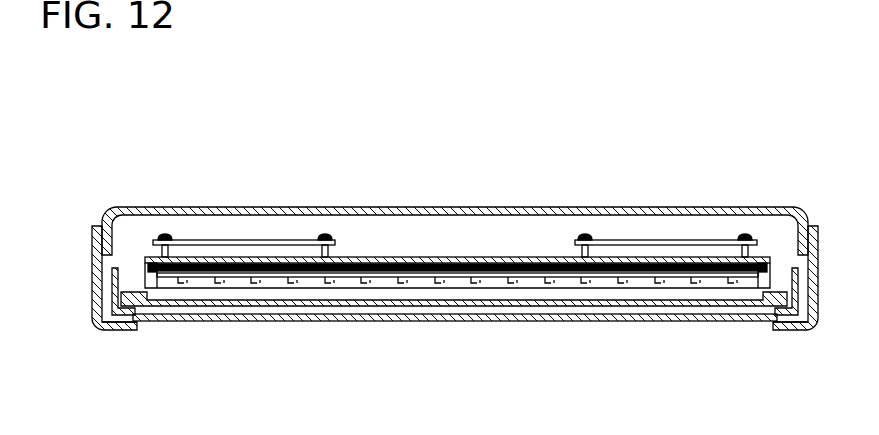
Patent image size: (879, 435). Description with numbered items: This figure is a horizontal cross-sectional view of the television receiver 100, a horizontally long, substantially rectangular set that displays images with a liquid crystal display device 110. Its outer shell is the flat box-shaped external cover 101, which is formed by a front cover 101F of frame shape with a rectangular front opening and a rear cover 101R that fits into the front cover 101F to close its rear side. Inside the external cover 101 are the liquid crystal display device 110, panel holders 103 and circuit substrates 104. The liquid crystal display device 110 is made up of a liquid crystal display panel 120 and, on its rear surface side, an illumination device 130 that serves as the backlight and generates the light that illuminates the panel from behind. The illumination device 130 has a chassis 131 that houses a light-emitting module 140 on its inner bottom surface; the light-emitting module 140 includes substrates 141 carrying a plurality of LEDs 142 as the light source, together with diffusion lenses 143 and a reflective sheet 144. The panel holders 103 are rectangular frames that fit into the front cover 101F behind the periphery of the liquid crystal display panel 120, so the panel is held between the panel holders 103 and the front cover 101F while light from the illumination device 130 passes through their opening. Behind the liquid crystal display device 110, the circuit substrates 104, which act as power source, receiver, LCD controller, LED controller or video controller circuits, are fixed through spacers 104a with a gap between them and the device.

The television receiver 100 is at (739, 149).
The external cover 101 is at (225, 136).
The front cover 101F is at (96, 226).
The rear cover 101R is at (190, 207).
The panel holders 103 is at (117, 323).
The circuit substrates 104 is at (298, 240).
The spacers 104a is at (336, 249).
The liquid crystal display device 110 is at (663, 346).
The liquid crystal display panel 120 is at (533, 324).
The illumination device 130 is at (412, 253).
The chassis 131 is at (460, 273).
The light-emitting module 140 is at (425, 292).
The substrates 141 is at (500, 264).
The LEDs 142 is at (290, 284).
The diffusion lenses 143 is at (355, 293).
The reflective sheet 144 is at (177, 322).